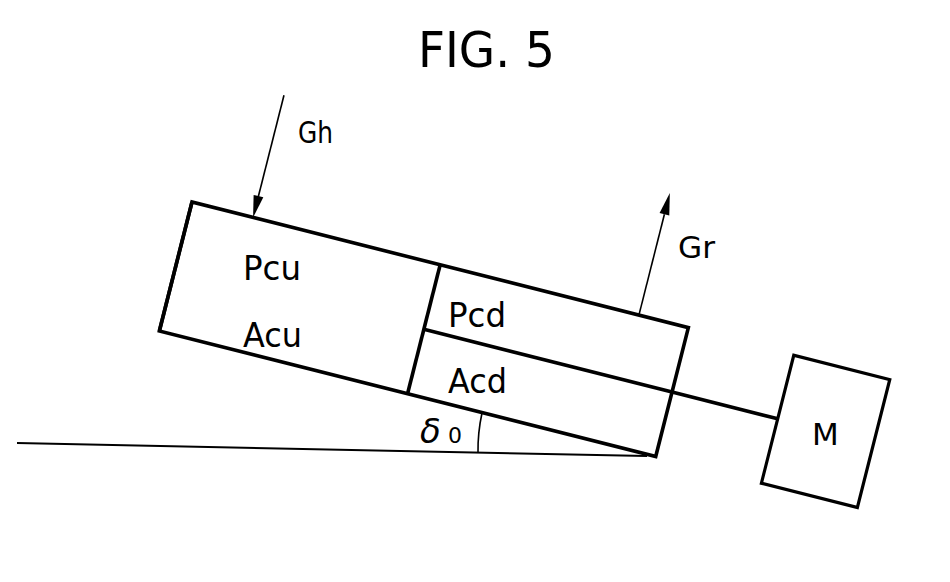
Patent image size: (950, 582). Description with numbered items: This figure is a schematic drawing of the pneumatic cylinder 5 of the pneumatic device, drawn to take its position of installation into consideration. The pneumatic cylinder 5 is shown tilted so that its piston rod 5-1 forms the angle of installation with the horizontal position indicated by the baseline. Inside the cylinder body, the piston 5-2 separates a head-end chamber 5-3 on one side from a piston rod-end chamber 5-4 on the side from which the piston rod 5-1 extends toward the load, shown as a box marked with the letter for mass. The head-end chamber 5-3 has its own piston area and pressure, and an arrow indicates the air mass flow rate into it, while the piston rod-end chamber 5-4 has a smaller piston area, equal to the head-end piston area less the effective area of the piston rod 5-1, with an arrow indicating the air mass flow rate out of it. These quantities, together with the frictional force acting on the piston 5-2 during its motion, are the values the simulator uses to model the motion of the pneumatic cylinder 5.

The pneumatic cylinder 5 is at (393, 252).
The piston rod 5-1 is at (728, 402).
The piston 5-2 is at (416, 372).
The head-end chamber 5-3 is at (190, 272).
The piston rod-end chamber 5-4 is at (541, 307).